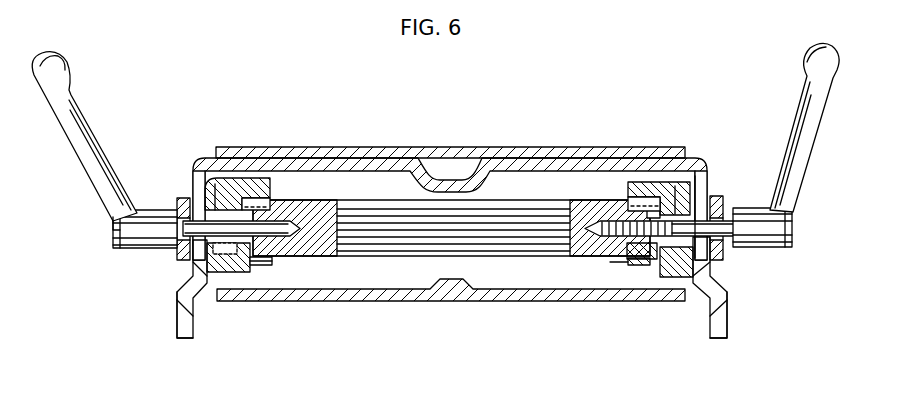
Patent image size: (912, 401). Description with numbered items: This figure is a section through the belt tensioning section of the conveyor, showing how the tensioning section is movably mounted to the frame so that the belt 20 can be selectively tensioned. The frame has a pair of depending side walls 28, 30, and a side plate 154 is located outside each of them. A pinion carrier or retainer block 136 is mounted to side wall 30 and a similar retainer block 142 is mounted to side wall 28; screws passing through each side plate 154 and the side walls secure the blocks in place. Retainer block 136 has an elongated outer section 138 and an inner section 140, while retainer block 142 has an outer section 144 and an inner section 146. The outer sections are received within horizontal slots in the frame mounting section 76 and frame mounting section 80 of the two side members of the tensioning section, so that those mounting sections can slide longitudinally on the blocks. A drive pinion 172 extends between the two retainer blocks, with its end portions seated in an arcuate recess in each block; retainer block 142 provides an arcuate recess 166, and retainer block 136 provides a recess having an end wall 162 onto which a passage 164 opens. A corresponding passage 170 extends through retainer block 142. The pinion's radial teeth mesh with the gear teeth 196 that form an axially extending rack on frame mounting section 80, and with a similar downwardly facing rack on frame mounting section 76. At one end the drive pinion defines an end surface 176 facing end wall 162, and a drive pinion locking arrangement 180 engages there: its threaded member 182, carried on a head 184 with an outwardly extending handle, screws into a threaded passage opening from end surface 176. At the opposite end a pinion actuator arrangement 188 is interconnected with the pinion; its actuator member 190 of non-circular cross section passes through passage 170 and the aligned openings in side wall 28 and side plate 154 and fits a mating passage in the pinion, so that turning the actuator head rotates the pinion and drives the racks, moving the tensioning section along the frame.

The belt 20 is at (465, 145).
The side wall 28 is at (196, 264).
The side wall 30 is at (702, 186).
The frame mounting section 76 is at (652, 280).
The frame mounting section 80 is at (251, 277).
The retainer block 136 is at (620, 272).
The outer section 138 is at (668, 280).
The inner section 140 is at (640, 266).
The retainer block 142 is at (275, 273).
The outer section 144 is at (213, 272).
The inner section 146 is at (230, 270).
The side plate 154 is at (182, 258).
The end wall 162 is at (647, 245).
The passage 164 is at (700, 250).
The arcuate recess 166 is at (270, 262).
The passage 170 is at (232, 186).
The drive pinion 172 is at (385, 190).
The end surface 176 is at (680, 186).
The drive pinion locking arrangement 180 is at (810, 209).
The threaded member 182 is at (692, 200).
The head 184 is at (770, 248).
The pinion actuator arrangement 188 is at (78, 240).
The actuator member 190 is at (228, 205).
The gear teeth 196 is at (236, 214).